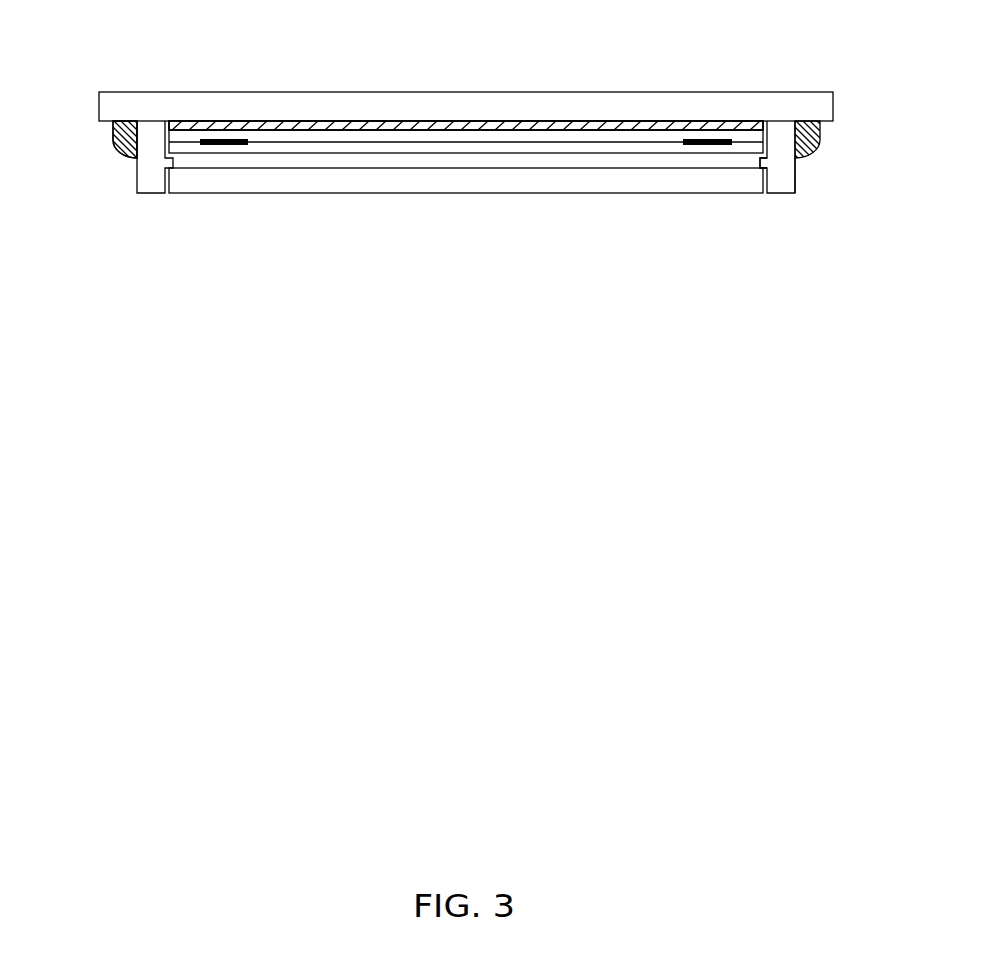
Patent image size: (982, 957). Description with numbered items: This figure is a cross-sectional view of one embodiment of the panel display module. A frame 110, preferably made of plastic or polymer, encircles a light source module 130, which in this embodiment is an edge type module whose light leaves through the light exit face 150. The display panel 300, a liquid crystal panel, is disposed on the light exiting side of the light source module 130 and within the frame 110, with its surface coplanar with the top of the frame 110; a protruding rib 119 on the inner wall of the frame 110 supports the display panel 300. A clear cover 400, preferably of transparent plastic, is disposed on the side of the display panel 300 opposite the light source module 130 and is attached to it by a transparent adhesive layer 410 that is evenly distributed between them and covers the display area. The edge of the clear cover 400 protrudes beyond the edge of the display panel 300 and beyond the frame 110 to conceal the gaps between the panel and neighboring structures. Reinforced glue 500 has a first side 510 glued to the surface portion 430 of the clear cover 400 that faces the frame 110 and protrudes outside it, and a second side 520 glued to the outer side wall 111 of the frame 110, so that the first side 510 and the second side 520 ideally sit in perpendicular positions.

The clear cover 400 is at (712, 105).
The transparent adhesive layer 410 is at (514, 127).
The surface portion 430 is at (825, 122).
The reinforced glue 500 is at (119, 142).
The first side 510 is at (128, 121).
The second side 520 is at (137, 140).
The display panel 300 is at (291, 128).
The light exit face 150 is at (368, 169).
The light source module 130 is at (453, 183).
The frame 110 is at (780, 185).
The protruding rib 119 is at (758, 162).
The outer side wall 111 is at (796, 173).